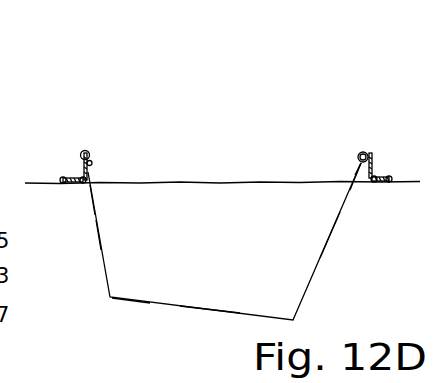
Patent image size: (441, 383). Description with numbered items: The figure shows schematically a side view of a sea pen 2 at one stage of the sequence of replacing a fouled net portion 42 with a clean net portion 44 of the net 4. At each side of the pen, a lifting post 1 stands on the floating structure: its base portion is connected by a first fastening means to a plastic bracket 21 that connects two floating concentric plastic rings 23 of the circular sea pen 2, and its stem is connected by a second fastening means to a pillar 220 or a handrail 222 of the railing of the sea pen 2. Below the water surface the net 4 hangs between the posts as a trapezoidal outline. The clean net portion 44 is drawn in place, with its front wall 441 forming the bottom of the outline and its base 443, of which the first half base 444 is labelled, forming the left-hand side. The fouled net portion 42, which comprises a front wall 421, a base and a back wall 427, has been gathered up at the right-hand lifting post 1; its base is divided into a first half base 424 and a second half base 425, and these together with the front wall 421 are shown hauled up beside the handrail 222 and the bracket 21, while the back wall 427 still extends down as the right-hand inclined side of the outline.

The lifting post 1 is at (374, 152).
The sea pen 2 is at (222, 150).
The net 4 is at (92, 270).
The plastic bracket 21 is at (400, 100).
The plastic rings 23 is at (62, 178).
The fouled net portion 42 is at (360, 153).
The clean net portion 44 is at (87, 152).
The pillar 220 is at (82, 178).
The handrail 222 is at (356, 154).
The front wall 421 is at (367, 150).
The first half base 424 is at (362, 152).
The second half base 425 is at (362, 152).
The back wall 427 is at (333, 228).
The front wall 441 is at (228, 316).
The base 443 is at (92, 217).
The first half base 444 is at (102, 253).